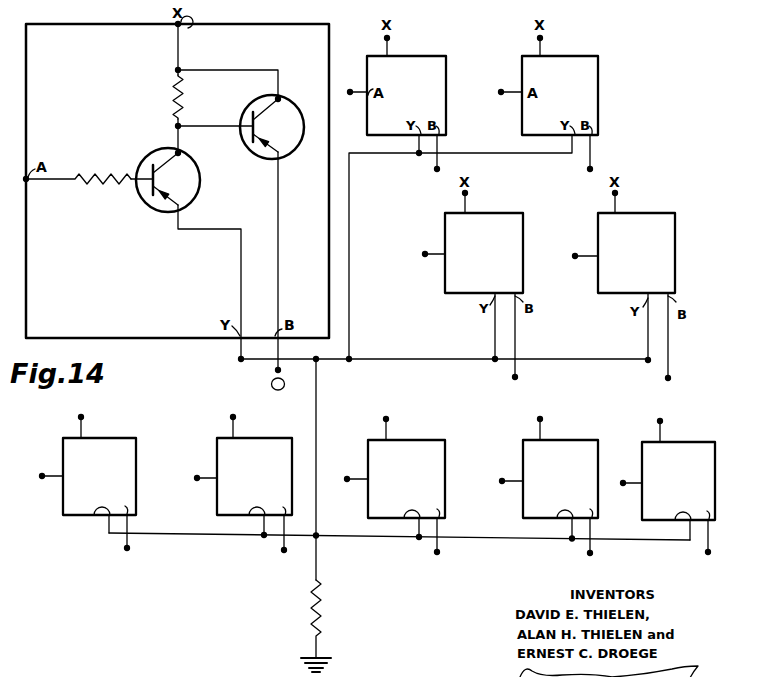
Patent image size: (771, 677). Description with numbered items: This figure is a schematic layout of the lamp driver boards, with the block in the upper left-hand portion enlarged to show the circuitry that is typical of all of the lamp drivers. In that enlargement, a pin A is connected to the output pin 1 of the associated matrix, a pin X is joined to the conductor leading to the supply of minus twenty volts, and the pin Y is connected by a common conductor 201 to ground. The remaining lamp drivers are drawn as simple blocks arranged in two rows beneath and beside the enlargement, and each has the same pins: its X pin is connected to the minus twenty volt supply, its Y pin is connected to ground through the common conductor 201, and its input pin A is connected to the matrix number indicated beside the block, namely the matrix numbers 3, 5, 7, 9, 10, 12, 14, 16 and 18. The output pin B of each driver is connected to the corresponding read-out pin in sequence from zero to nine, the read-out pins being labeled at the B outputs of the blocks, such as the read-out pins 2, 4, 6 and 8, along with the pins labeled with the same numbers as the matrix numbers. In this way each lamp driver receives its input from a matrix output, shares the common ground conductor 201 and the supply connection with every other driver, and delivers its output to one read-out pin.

The output pin of the associated matrix 1 is at (230, 161).
The read-out pin 2 is at (597, 157).
The matrix number 3 is at (440, 242).
The read-out pin 4 is at (678, 343).
The matrix number 5 is at (324, 327).
The read-out pin 6 is at (291, 540).
The matrix number 7 is at (436, 410).
The read-out pin 8 is at (597, 544).
The matrix number 9 is at (644, 412).
The matrix number 10 is at (81, 466).
The matrix number 12 is at (239, 466).
The matrix number 14 is at (392, 468).
The matrix number 16 is at (545, 469).
The matrix number 18 is at (665, 471).
The common conductor 201 is at (316, 425).